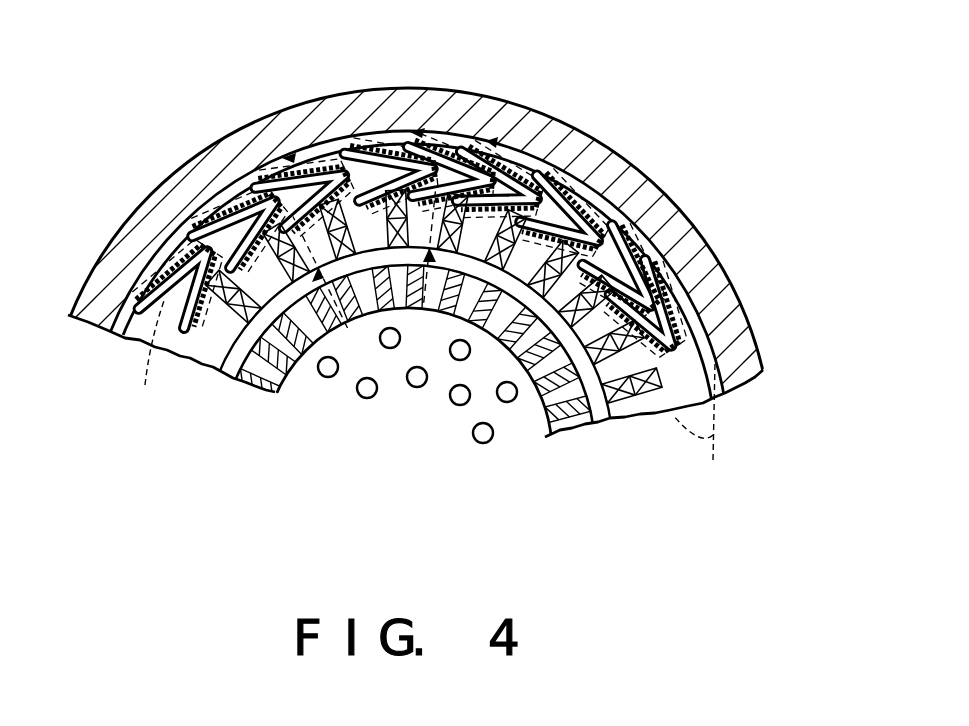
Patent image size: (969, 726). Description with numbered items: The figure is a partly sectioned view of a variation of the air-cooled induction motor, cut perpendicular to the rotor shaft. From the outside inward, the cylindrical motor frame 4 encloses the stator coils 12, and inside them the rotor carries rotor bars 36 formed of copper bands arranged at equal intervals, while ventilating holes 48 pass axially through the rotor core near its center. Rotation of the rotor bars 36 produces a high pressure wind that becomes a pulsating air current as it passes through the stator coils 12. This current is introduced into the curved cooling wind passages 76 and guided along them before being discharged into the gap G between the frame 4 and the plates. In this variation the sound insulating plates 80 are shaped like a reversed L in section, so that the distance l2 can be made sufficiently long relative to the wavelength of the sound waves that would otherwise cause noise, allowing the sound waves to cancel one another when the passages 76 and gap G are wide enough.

The motor frame 4 is at (489, 113).
The stator coils 12 is at (665, 250).
The gap G is at (530, 157).
The cooling wind passages 76 is at (177, 262).
The sound insulating plates 80 is at (236, 208).
The rotor bars 36 is at (570, 427).
The ventilating holes 48 is at (412, 380).
The distance l2 is at (424, 401).